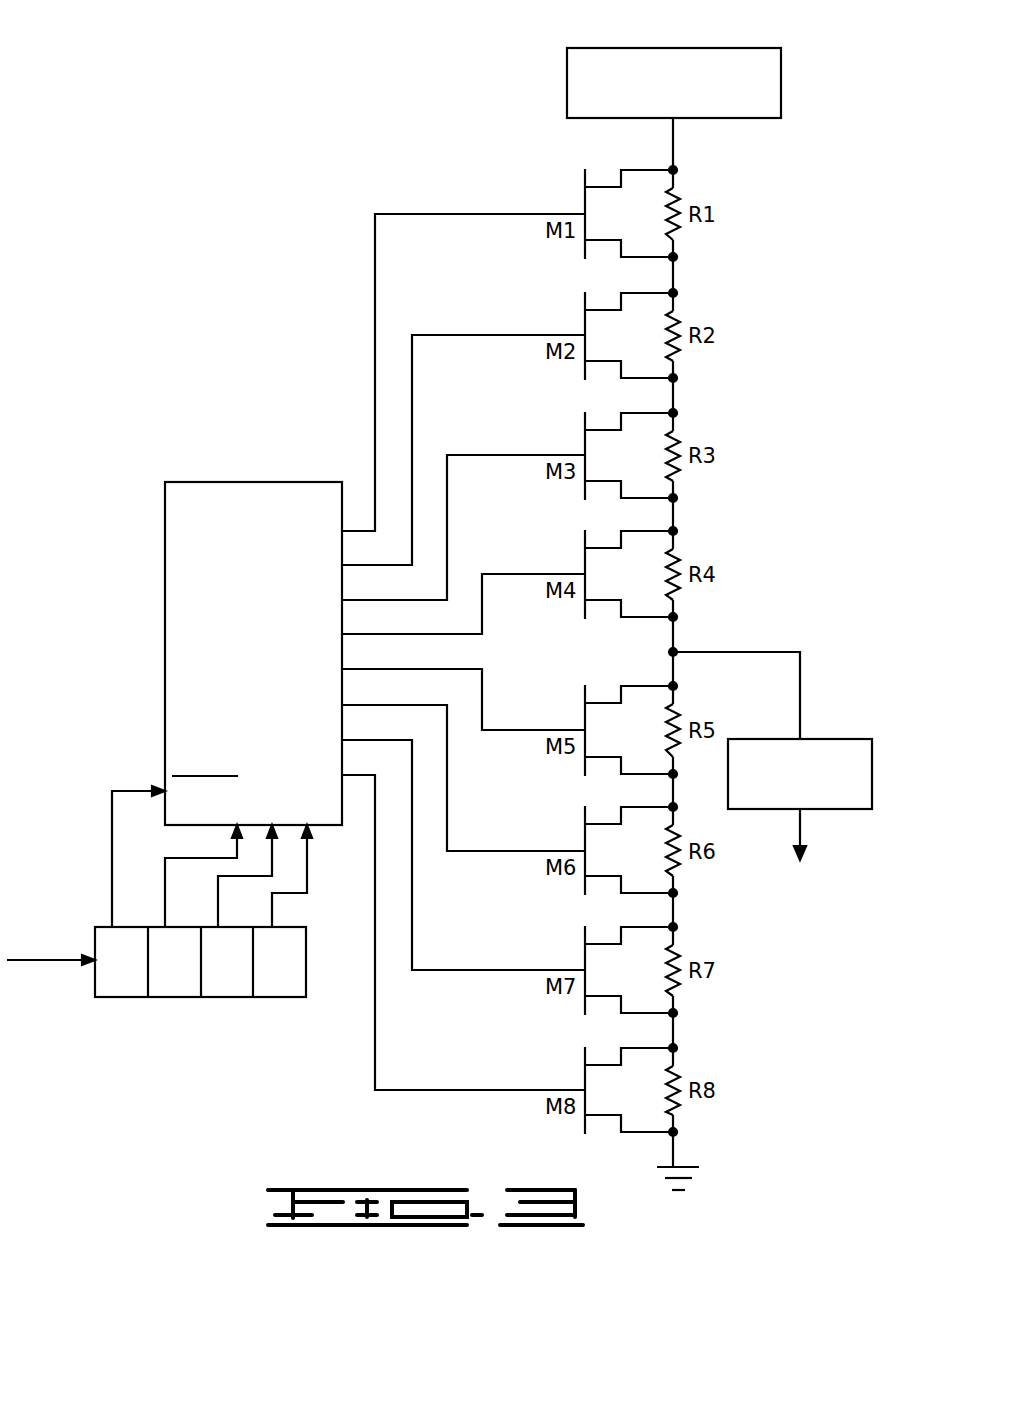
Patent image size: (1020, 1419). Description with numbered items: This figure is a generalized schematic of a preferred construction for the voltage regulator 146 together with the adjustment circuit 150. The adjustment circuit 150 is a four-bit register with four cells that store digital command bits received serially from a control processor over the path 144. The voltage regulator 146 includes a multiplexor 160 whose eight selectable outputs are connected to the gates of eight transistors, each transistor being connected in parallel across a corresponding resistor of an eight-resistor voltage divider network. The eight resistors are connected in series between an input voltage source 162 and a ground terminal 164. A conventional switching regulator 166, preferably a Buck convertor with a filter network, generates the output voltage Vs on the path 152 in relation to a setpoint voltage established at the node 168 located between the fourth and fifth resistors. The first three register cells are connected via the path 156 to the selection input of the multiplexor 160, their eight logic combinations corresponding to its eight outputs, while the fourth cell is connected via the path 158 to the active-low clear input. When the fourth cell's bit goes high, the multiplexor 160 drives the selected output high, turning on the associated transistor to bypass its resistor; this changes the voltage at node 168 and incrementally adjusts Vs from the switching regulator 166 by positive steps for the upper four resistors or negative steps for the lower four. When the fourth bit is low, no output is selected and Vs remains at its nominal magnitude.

The path 144 is at (45, 961).
The voltage regulator 146 is at (404, 148).
The adjustment circuit 150 is at (182, 1012).
The path 152 is at (800, 822).
The path 156 is at (325, 915).
The path 158 is at (138, 790).
The multiplexor 160 is at (250, 482).
The input voltage source 162 is at (668, 47).
The ground terminal 164 is at (680, 1152).
The switching regulator 166 is at (817, 739).
The node 168 is at (690, 635).